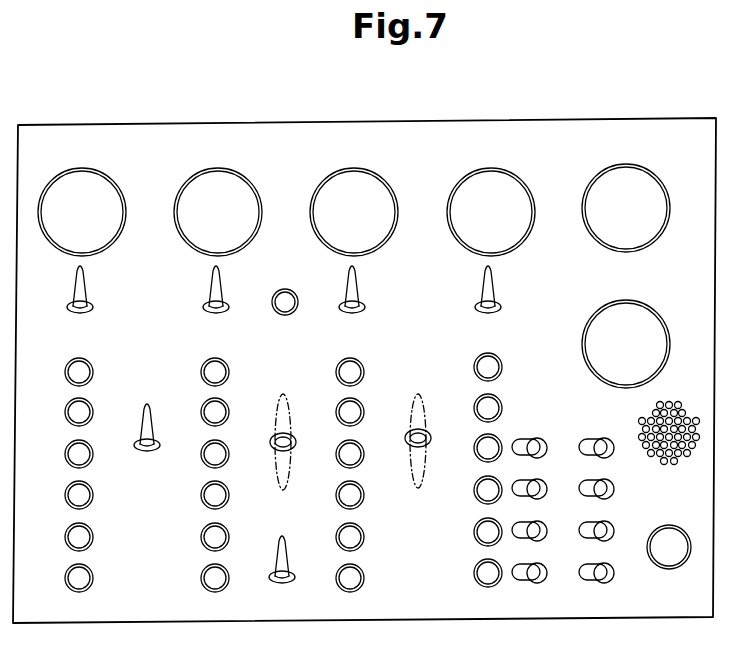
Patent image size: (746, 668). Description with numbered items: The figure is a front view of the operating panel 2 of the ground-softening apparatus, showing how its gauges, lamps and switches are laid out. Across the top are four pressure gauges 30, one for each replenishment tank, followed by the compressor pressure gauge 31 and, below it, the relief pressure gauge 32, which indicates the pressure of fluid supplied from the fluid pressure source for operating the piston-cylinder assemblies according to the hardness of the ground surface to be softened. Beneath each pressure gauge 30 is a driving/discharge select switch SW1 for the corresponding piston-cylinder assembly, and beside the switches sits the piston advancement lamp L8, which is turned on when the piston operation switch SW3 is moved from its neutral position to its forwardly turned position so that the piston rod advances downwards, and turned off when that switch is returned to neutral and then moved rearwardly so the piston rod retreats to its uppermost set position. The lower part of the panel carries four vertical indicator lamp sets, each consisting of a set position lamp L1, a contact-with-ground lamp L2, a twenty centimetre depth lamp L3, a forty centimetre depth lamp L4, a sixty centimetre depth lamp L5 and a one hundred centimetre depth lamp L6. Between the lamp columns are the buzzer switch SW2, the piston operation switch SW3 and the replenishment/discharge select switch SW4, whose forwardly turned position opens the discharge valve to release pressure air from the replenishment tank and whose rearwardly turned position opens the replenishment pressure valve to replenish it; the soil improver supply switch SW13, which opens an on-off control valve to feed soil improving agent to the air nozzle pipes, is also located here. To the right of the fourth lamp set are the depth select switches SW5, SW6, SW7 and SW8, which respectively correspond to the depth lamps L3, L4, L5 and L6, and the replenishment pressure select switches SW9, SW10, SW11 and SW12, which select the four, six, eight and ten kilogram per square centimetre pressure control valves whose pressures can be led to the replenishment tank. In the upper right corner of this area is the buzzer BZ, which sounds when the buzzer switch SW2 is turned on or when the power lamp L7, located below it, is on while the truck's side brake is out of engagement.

The operating panel 2 is at (545, 90).
The pressure gauge 30 is at (76, 174).
The compressor pressure gauge 31 is at (622, 170).
The relief pressure gauge 32 is at (622, 305).
The driving/discharge select switch SW1 is at (88, 291).
The buzzer switch SW2 is at (152, 432).
The piston operation switch SW3 is at (288, 437).
The replenishment/discharge select switch SW4 is at (423, 433).
The depth select switch SW5 is at (522, 440).
The depth select switch SW6 is at (522, 486).
The depth select switch SW7 is at (522, 528).
The depth select switch SW8 is at (522, 570).
The replenishment pressure select switch SW9 is at (588, 440).
The replenishment pressure select switch SW10 is at (589, 486).
The replenishment pressure select switch SW11 is at (589, 528).
The replenishment pressure select switch SW12 is at (589, 570).
The soil improver supply switch SW13 is at (287, 558).
The set position lamp L1 is at (93, 373).
The contact-with-ground lamp L2 is at (93, 413).
The 20 cm depth lamp L3 is at (93, 455).
The 40 cm depth lamp L4 is at (93, 496).
The 60 cm depth lamp L5 is at (93, 538).
The 100 cm depth lamp L6 is at (93, 579).
The power lamp L7 is at (678, 531).
The piston advancement lamp L8 is at (295, 293).
The buzzer BZ is at (672, 412).